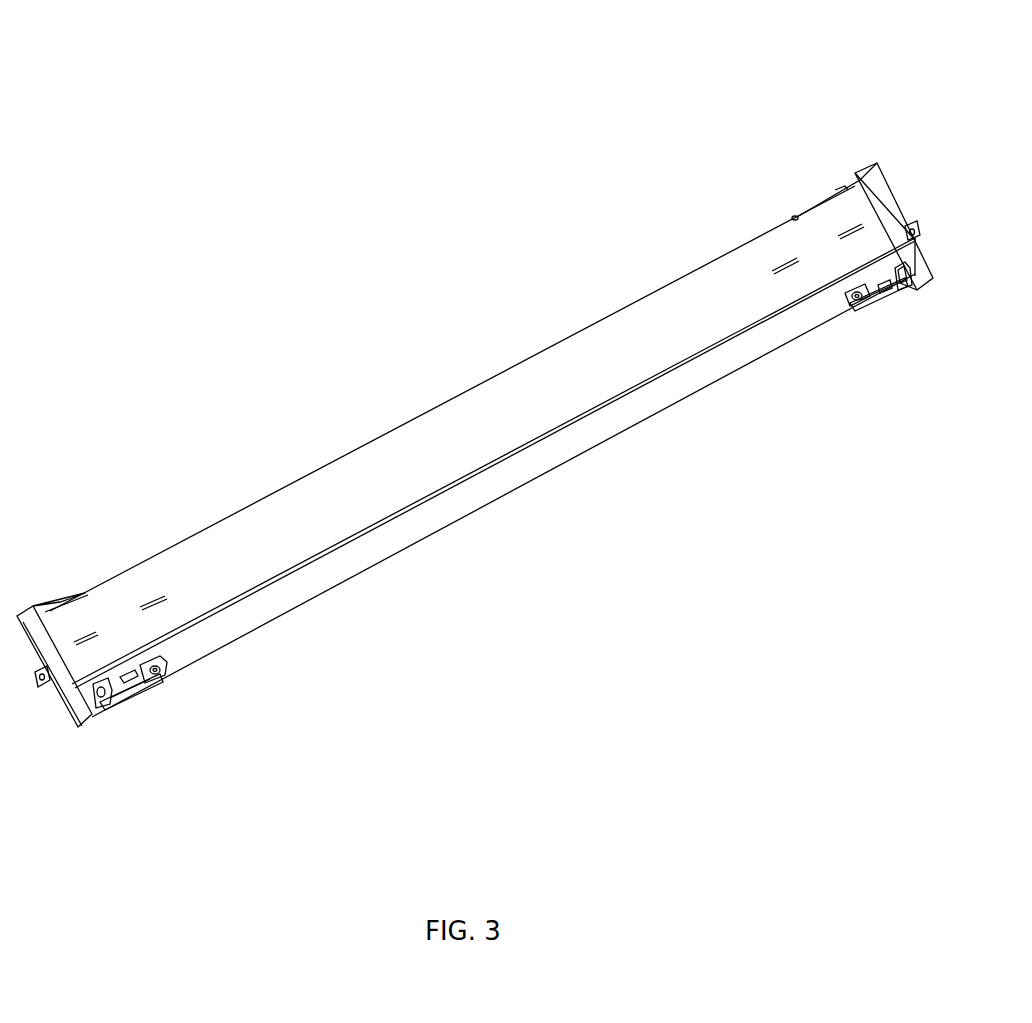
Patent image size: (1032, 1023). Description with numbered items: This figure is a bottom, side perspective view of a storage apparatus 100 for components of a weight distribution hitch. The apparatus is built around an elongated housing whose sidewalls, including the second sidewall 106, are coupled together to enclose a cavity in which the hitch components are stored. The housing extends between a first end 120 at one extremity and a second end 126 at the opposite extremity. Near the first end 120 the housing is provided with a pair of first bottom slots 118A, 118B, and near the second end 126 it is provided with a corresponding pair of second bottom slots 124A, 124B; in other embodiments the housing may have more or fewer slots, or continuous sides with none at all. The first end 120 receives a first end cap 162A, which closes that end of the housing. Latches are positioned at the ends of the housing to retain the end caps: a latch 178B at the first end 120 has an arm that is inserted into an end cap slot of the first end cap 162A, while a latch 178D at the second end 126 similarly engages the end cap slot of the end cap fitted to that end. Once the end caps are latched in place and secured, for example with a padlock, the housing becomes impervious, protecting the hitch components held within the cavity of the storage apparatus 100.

The storage apparatus 100 is at (207, 80).
The second sidewall 106 is at (543, 422).
The first bottom slot 118A is at (92, 638).
The first bottom slot 118B is at (160, 600).
The first end 120 is at (104, 596).
The second bottom slot 124A is at (850, 228).
The second bottom slot 124B is at (782, 267).
The second end 126 is at (807, 326).
The first end cap 162A is at (83, 700).
The latch 178B is at (155, 672).
The latch 178D is at (873, 293).